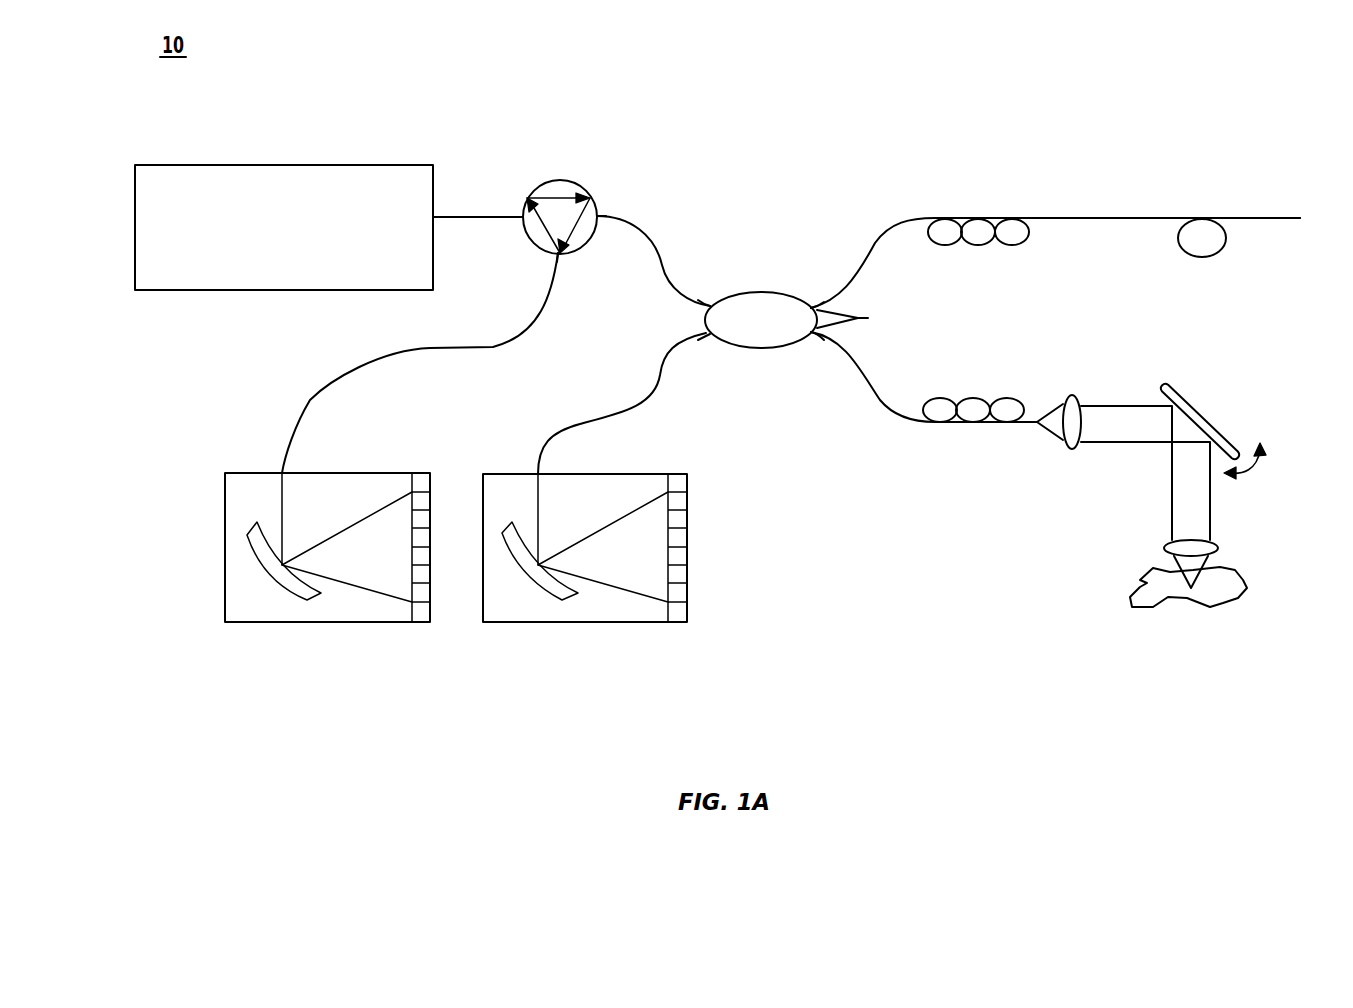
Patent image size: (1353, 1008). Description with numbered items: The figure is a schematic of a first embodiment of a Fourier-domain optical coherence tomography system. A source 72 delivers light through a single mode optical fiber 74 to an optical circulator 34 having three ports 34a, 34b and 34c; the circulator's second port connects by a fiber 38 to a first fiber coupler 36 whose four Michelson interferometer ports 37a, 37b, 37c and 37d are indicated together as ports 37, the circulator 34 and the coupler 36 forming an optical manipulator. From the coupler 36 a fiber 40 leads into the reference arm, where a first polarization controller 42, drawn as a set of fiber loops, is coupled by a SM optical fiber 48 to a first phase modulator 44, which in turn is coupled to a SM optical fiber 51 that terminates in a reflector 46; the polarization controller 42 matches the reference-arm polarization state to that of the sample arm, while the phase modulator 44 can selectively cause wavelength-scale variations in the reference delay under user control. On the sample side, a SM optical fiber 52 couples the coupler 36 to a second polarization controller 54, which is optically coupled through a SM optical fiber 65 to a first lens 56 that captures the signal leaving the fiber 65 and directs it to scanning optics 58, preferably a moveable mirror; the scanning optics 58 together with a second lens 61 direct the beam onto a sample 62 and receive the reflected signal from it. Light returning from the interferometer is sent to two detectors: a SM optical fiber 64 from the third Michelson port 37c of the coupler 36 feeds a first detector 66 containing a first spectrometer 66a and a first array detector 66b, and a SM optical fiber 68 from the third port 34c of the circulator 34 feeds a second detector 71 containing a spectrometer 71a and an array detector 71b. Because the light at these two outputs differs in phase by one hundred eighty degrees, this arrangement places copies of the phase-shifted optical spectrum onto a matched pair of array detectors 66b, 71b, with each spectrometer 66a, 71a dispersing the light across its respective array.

The source 72 is at (135, 212).
The SM optical fiber 74 is at (462, 216).
The optical circulator 34 is at (578, 184).
The port 34a is at (523, 224).
The port 34b is at (598, 216).
The third port 34c is at (567, 256).
The fiber from circulator to coupler 38 is at (645, 228).
The first fiber coupler 36 is at (758, 291).
The coupler ports 37 is at (856, 320).
The Michelson interferometer port 37a is at (813, 308).
The Michelson interferometer port 37b is at (815, 333).
The third Michelson interferometer port 37c is at (710, 336).
The Michelson interferometer port 37d is at (715, 305).
The reference arm fiber 40 is at (868, 252).
The first polarization controller 42 is at (928, 218).
The SM optical fiber 48 is at (1135, 220).
The SM optical fiber 51 is at (1262, 217).
The reflector 46 is at (1298, 217).
The first phase modulator 44 is at (1223, 248).
The SM optical fiber 52 is at (862, 395).
The second polarization controller 54 is at (963, 423).
The SM optical fiber 65 is at (1028, 420).
The first lens 56 is at (1070, 447).
The scanning optics 58 is at (1185, 392).
The second lens 61 is at (1217, 545).
The sample 62 is at (1223, 603).
The SM optical fiber 64 is at (660, 367).
The SM optical fiber 68 is at (503, 348).
The second detector 71 is at (293, 551).
The spectrometer 71a is at (252, 532).
The array detector 71b is at (408, 603).
The first detector 66 is at (626, 570).
The first spectrometer 66a is at (560, 598).
The first array detector 66b is at (688, 606).